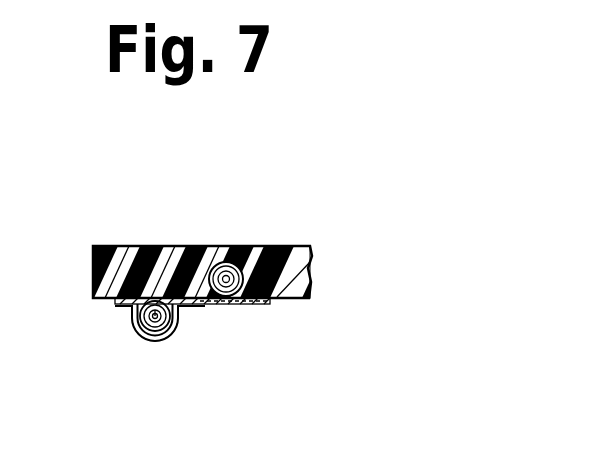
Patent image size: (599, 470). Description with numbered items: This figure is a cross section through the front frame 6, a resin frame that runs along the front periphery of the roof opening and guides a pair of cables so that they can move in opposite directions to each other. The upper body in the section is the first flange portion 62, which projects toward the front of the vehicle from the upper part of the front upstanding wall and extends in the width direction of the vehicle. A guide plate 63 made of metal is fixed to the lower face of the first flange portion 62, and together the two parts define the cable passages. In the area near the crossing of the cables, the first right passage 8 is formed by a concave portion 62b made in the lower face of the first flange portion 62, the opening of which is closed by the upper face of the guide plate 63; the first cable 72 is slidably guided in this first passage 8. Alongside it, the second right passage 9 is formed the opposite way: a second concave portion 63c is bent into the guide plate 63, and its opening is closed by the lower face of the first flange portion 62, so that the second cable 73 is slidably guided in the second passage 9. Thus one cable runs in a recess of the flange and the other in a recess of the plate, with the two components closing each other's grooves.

The front frame 6 is at (96, 242).
The first passage 8 is at (250, 257).
The first flange portion 62 is at (147, 258).
The concave portion 62b is at (218, 262).
The guide plate 63 is at (193, 312).
The second concave portion 63c is at (165, 338).
The first cable 72 is at (237, 305).
The second cable 73 is at (150, 340).
The second passage 9 is at (124, 333).